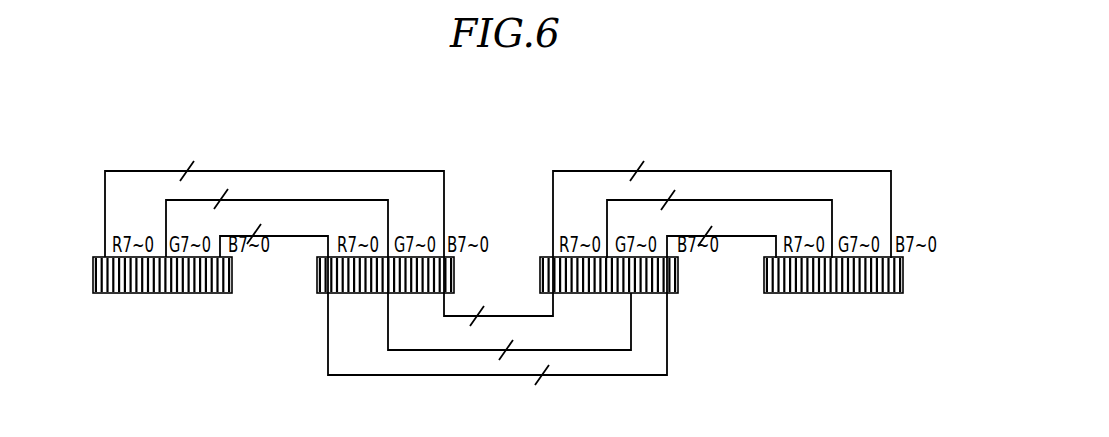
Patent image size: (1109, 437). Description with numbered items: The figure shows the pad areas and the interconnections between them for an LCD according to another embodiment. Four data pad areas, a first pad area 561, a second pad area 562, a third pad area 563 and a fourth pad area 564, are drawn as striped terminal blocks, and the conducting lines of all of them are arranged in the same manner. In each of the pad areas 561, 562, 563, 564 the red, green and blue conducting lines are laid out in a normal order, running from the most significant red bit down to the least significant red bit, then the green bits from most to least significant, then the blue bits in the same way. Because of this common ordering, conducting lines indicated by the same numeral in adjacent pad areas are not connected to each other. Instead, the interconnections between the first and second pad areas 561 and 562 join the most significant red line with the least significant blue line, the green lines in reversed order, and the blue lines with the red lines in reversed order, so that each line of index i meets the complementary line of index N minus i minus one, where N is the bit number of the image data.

The first pad area 561 is at (180, 293).
The second pad area 562 is at (455, 278).
The third pad area 563 is at (679, 285).
The fourth pad area 564 is at (812, 293).